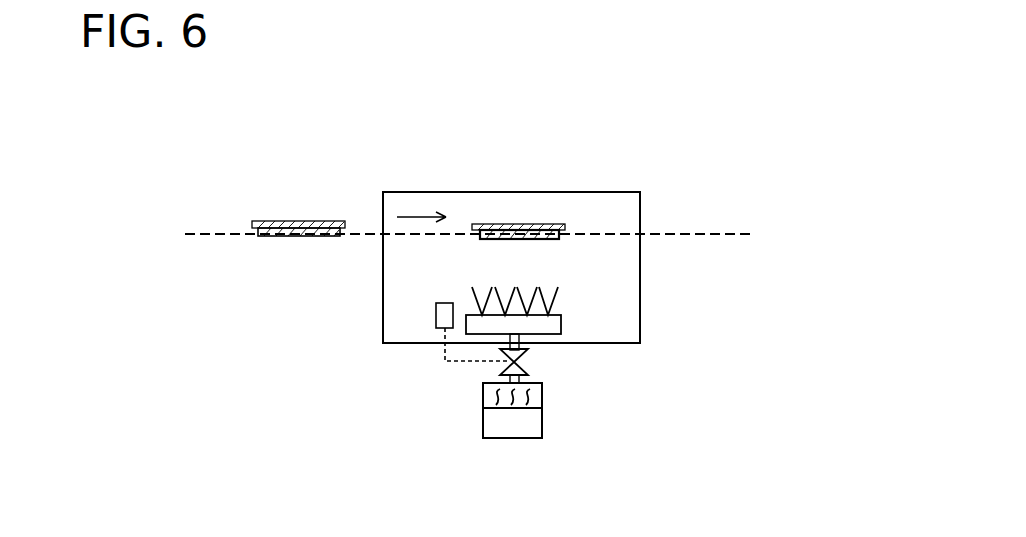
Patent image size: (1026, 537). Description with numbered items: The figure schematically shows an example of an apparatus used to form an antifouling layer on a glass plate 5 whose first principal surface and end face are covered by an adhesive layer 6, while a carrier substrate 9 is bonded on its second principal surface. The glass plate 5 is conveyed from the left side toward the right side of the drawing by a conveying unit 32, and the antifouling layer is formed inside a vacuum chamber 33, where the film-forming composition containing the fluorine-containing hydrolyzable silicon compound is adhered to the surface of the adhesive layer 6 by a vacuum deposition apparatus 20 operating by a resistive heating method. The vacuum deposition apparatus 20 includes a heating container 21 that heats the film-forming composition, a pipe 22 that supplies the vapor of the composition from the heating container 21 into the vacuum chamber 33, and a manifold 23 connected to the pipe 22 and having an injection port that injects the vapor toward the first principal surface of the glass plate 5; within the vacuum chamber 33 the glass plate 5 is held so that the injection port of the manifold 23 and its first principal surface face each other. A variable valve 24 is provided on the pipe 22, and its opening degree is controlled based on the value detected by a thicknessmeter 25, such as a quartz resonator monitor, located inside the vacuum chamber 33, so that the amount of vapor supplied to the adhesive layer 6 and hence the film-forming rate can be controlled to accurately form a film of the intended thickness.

The glass plate 5 is at (298, 236).
The adhesive layer 6 is at (522, 239).
The carrier substrate 9 is at (290, 221).
The vacuum deposition apparatus 20 is at (443, 435).
The heating container 21 is at (527, 439).
The pipe 22 is at (520, 338).
The manifold 23 is at (562, 320).
The variable valve 24 is at (503, 371).
The thicknessmeter 25 is at (437, 328).
The conveying unit 32 is at (585, 233).
The vacuum chamber 33 is at (452, 192).